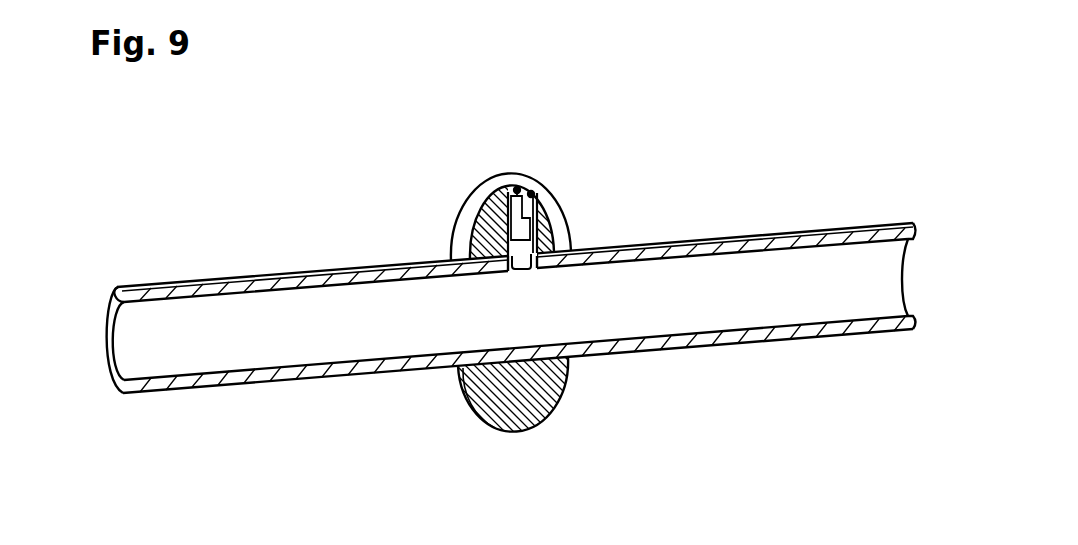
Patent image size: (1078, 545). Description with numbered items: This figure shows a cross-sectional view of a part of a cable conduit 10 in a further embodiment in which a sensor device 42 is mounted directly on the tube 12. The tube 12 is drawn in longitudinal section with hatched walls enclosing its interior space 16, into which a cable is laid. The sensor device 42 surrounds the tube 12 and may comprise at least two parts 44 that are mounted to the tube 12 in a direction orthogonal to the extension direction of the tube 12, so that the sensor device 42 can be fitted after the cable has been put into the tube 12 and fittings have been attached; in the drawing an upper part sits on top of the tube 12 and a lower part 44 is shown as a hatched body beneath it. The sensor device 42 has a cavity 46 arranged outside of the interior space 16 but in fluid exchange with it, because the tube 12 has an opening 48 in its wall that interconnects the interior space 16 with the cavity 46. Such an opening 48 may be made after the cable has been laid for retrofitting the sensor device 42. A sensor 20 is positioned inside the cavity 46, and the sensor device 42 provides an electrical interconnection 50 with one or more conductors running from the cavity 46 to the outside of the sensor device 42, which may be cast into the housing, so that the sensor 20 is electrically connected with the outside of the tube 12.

The sensor arrangement 10 is at (666, 279).
The tube 12 is at (298, 273).
The interior space 16 is at (238, 322).
The sensor 20 is at (482, 224).
The sensor device 42 is at (472, 232).
The parts 44 is at (517, 432).
The cavity 46 is at (529, 186).
The opening 48 is at (522, 270).
The electrical interconnection 50 is at (516, 174).